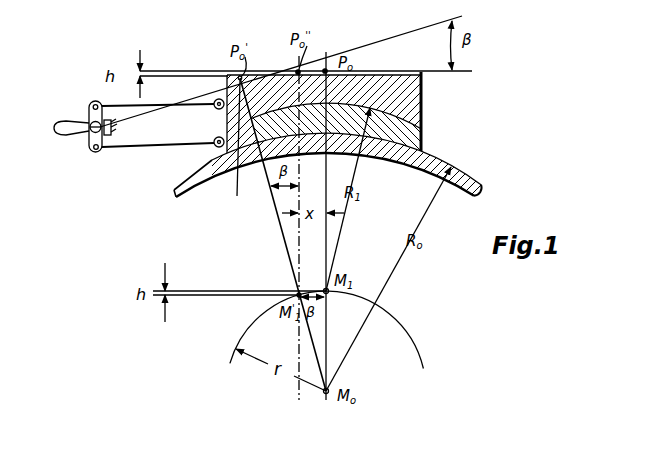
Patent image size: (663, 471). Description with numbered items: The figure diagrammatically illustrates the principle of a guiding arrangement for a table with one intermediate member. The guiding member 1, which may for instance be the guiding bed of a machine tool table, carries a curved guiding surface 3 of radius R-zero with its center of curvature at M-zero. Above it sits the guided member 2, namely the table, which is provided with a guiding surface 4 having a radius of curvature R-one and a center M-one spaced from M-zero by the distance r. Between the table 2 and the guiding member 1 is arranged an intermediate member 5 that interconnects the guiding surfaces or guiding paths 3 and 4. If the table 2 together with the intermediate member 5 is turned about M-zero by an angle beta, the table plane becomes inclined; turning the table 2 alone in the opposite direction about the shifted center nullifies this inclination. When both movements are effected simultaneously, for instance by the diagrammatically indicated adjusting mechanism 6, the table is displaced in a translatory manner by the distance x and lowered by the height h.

The guiding member 1 is at (470, 181).
The guided member 2 is at (388, 88).
The curved guiding surface 3 is at (433, 153).
The guiding surface 4 is at (237, 196).
The intermediate member 5 is at (226, 173).
The adjusting mechanism 6 is at (90, 140).